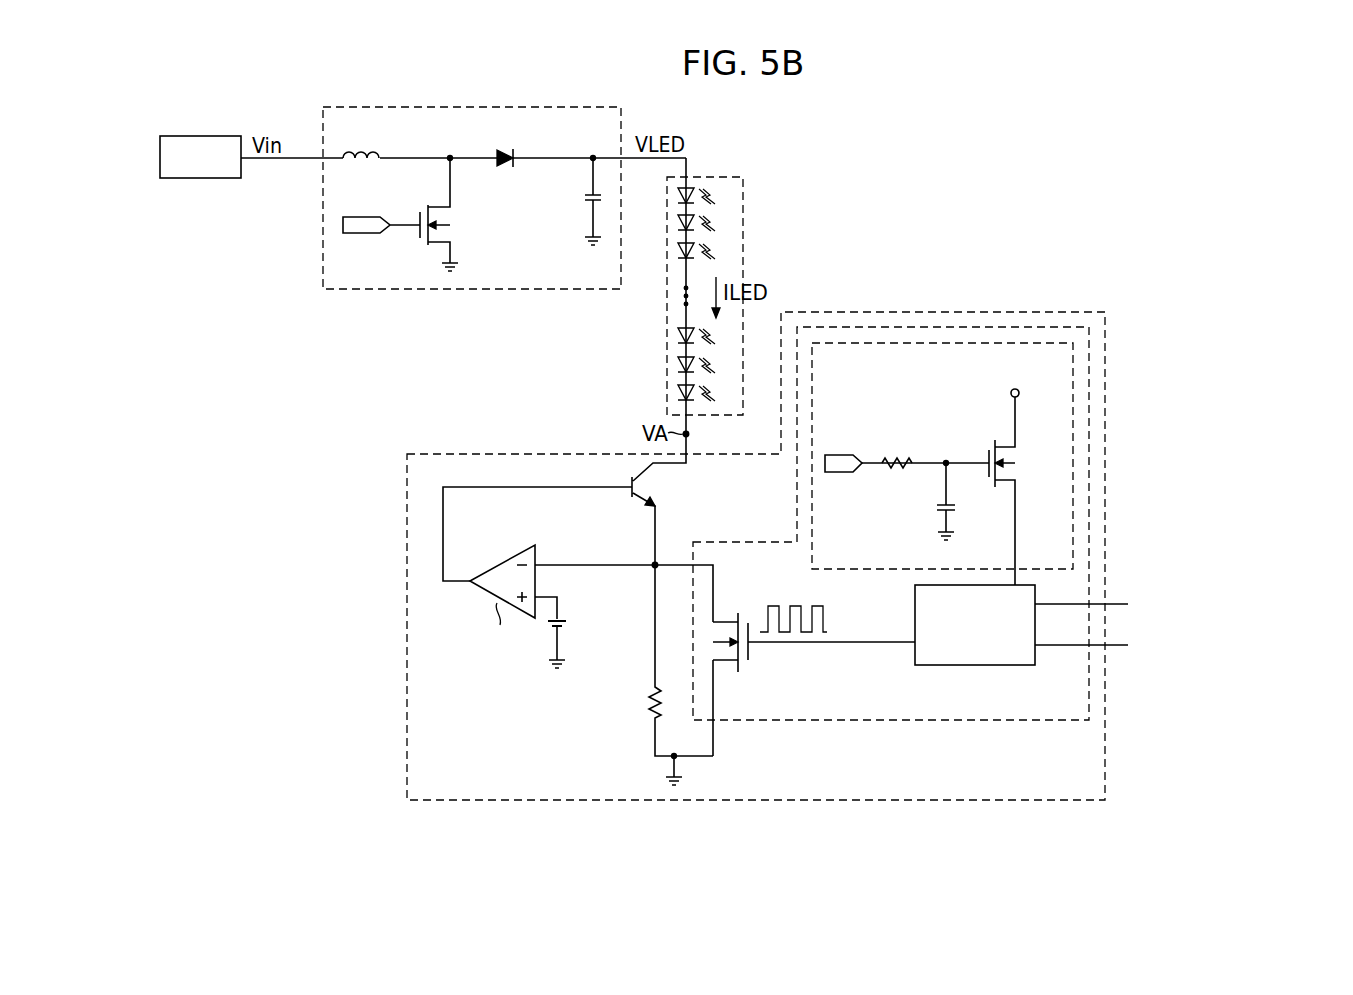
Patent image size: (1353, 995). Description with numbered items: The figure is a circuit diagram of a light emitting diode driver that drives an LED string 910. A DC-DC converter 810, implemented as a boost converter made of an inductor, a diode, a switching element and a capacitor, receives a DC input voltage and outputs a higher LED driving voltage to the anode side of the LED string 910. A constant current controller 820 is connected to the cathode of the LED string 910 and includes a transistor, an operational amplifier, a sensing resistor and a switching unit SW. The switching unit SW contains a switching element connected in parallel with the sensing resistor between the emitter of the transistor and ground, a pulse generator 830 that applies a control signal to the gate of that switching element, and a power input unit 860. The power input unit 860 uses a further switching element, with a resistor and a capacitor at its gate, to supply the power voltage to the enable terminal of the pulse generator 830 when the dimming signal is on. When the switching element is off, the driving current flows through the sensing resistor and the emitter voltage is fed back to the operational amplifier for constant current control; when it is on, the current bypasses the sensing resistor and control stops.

The DC-DC converter 810 is at (362, 290).
The LED string 910 is at (743, 198).
The constant current controller 820 is at (1105, 495).
The switching unit SW is at (1089, 428).
The power input unit 860 is at (1073, 382).
The pulse generator 830 is at (915, 603).